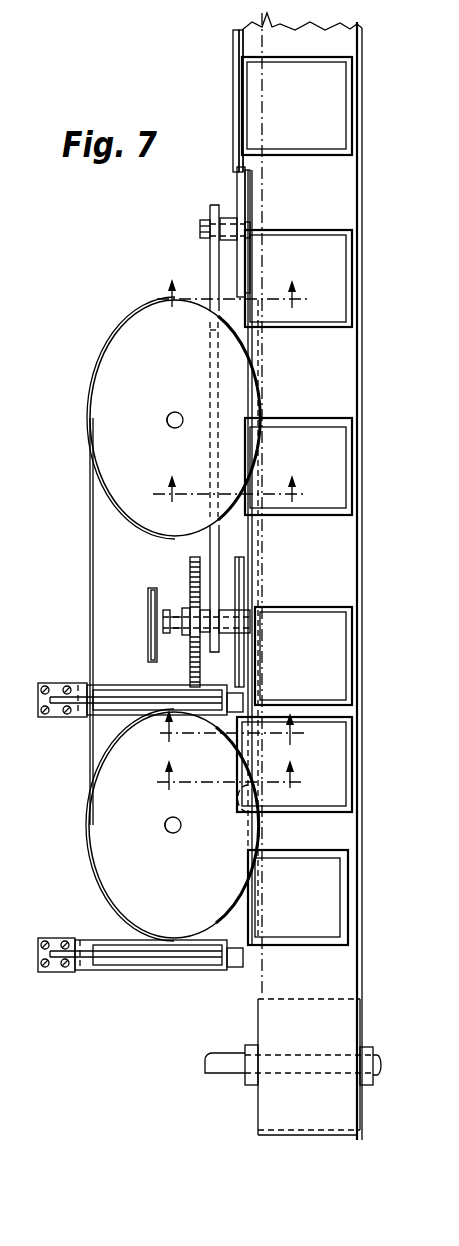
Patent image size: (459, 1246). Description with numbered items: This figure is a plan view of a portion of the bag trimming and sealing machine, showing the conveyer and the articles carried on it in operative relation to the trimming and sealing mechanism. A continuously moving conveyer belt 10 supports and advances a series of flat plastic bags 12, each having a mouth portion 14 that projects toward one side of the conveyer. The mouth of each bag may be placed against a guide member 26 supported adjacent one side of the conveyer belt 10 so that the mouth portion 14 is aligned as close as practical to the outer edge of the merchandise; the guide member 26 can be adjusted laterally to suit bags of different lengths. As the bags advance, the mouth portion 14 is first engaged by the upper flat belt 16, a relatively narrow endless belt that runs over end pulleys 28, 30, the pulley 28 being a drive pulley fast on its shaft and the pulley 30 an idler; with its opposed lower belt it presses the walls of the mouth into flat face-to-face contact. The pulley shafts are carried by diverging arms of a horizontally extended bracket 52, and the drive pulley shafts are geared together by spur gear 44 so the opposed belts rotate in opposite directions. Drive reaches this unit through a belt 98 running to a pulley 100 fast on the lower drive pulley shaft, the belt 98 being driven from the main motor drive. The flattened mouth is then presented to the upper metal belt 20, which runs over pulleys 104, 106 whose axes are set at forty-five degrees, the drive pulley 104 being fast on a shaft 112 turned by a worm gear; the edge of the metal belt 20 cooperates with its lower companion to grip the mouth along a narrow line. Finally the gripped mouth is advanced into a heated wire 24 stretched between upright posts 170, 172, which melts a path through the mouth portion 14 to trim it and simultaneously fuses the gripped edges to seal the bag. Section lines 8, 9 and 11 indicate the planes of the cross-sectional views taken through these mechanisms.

The conveyer belt 10 is at (351, 199).
The flat plastic bags 12 is at (330, 104).
The mouth portion 14 is at (247, 90).
The upper flat belt 16 is at (245, 268).
The upper metal belt 20 is at (255, 530).
The heated wire 24 is at (248, 900).
The guide member 26 is at (237, 48).
The end pulley 28 is at (257, 543).
The end pulley 30 is at (252, 197).
The spur gear 44 is at (190, 573).
The bracket 52 is at (210, 256).
The drive belt 98 is at (155, 642).
The pulley 100 is at (148, 627).
The upper pulley 104 is at (107, 865).
The upper pulley 106 is at (108, 387).
The shaft 112 is at (163, 822).
The upright post 170 is at (158, 963).
The upright post 172 is at (65, 685).
The section line 8 is at (231, 295).
The section line 9 is at (230, 491).
The section line 11 is at (228, 778).